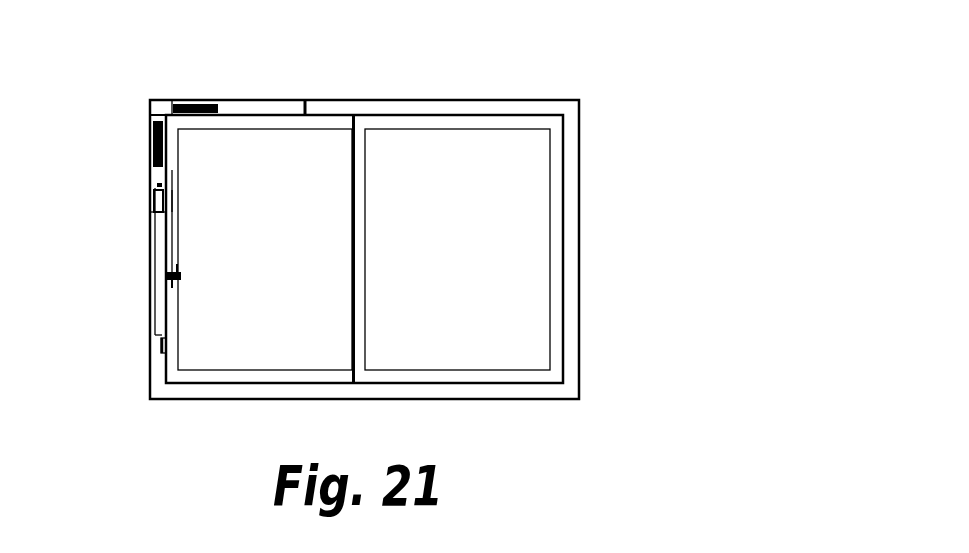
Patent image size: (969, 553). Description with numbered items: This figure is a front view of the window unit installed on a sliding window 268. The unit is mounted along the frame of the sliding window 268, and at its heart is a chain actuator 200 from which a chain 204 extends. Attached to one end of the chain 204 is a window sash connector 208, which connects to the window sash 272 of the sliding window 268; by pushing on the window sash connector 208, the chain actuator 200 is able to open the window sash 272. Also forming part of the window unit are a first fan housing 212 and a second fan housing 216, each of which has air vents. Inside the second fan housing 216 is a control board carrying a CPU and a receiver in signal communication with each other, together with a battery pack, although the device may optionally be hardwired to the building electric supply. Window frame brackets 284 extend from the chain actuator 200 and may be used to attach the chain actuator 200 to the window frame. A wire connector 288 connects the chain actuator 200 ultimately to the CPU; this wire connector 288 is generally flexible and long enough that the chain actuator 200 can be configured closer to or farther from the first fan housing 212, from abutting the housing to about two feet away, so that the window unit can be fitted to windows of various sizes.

The chain actuator 200 is at (155, 297).
The chain 204 is at (173, 283).
The window sash connector 208 is at (188, 268).
The first fan housing 212 is at (152, 172).
The second fan housing 216 is at (270, 102).
The sliding window 268 is at (538, 392).
The window sash 272 is at (278, 373).
The window frame brackets 284 is at (170, 200).
The wire connector 288 is at (148, 202).